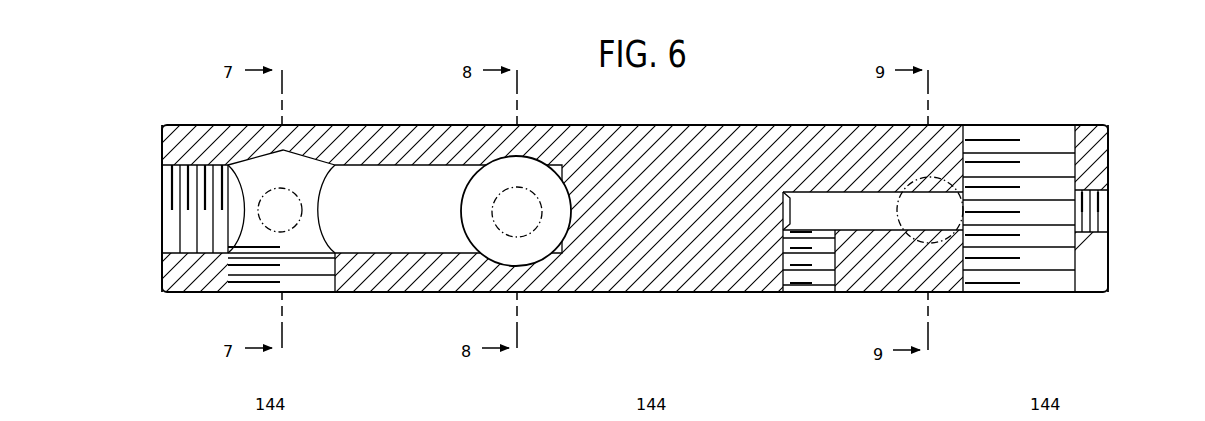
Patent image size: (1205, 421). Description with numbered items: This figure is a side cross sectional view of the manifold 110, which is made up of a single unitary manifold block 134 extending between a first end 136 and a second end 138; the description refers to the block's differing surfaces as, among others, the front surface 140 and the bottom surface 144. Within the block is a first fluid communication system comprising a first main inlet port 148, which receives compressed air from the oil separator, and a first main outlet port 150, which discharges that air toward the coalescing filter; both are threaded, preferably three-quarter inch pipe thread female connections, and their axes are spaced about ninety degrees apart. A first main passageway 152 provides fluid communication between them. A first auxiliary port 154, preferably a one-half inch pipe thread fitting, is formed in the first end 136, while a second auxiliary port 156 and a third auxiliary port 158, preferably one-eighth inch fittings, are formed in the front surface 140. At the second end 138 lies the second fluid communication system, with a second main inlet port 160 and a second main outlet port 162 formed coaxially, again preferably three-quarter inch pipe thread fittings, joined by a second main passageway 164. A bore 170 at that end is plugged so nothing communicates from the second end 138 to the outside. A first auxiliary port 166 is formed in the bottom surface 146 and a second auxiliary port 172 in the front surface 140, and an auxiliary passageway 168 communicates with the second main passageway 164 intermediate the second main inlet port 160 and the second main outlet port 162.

The manifold 110 is at (802, 105).
The unitary manifold block 134 is at (702, 278).
The first end 136 is at (162, 143).
The second end 138 is at (1108, 145).
The front surface 140 is at (698, 142).
The bottom surface 144 is at (577, 125).
The bottom surface 146 is at (605, 293).
The first main inlet port 148 is at (330, 292).
The first main outlet port 150 is at (467, 185).
The first main passageway 152 is at (426, 219).
The first auxiliary port 154 is at (162, 240).
The second auxiliary port 156 is at (296, 230).
The third auxiliary port 158 is at (535, 230).
The second main inlet port 160 is at (1047, 293).
The second main outlet port 162 is at (1052, 128).
The second main passageway 164 is at (1065, 185).
The first auxiliary port 166 is at (818, 296).
The auxiliary passageway 168 is at (867, 203).
The bore 170 is at (1110, 222).
The second auxiliary port 172 is at (940, 243).